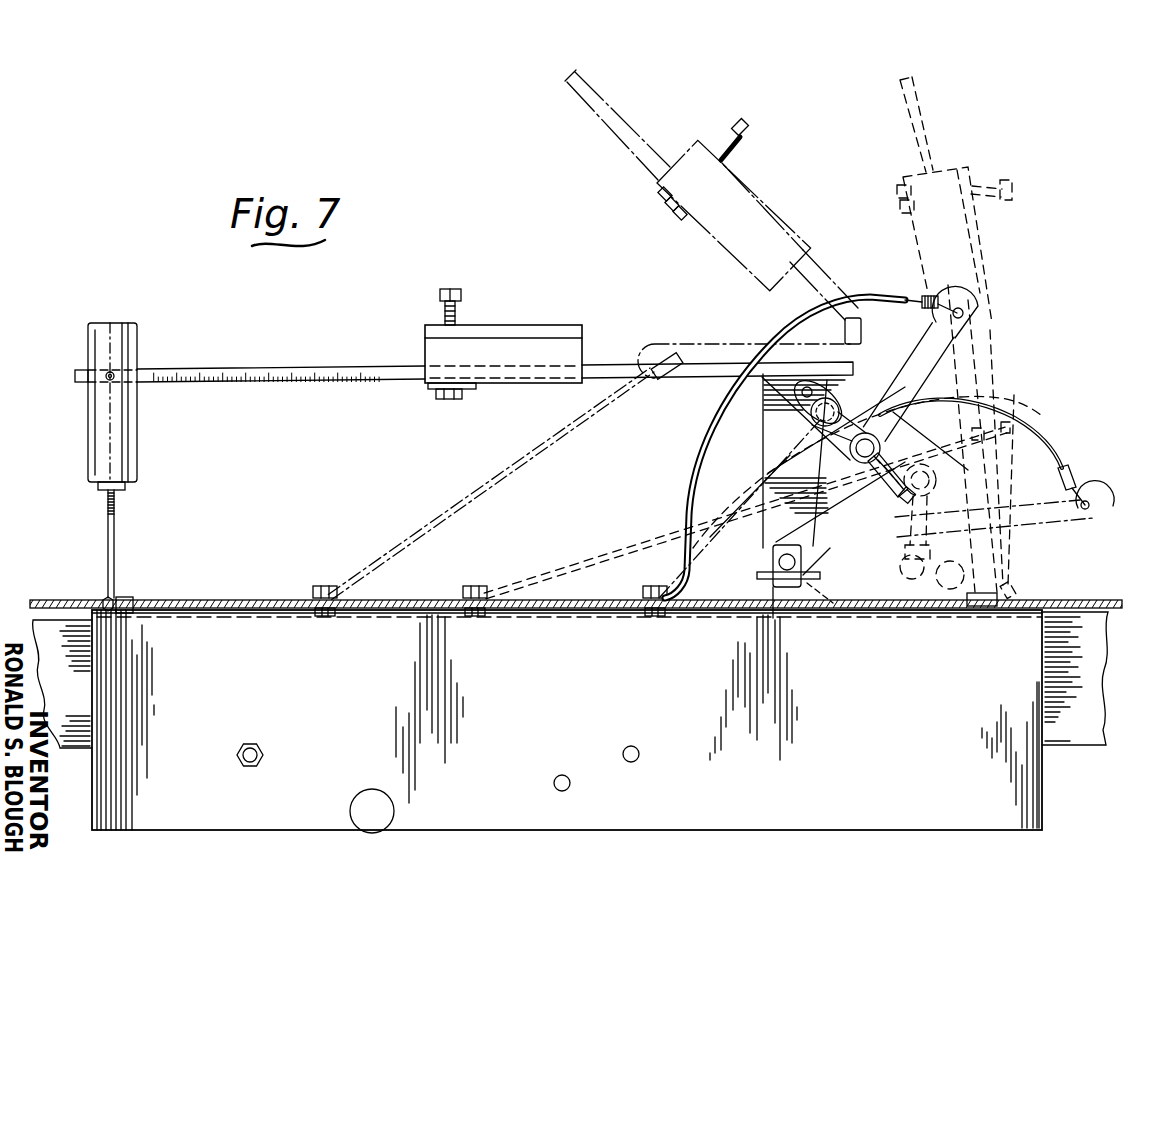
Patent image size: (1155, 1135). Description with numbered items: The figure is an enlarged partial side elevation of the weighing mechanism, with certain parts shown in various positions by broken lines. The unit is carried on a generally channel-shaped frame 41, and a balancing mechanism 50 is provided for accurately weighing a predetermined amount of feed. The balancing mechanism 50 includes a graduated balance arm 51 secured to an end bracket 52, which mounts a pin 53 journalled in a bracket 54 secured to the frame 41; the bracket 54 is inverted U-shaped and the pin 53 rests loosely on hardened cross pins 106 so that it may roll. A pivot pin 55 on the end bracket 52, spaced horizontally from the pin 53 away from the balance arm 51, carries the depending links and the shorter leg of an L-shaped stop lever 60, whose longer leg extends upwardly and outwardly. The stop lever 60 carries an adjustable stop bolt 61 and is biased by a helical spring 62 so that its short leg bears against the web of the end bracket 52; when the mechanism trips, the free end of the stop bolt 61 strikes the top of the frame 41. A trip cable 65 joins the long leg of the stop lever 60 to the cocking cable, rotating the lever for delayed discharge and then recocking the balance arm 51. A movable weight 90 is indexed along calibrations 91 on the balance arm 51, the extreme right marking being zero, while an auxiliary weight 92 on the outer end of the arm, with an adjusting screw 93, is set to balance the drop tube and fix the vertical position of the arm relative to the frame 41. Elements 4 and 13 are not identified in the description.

The frame 4 is at (6, 617).
The track bar 13 is at (61, 600).
The frame 41 is at (100, 702).
The balancing mechanism 50 is at (621, 357).
The balance arm 51 is at (147, 369).
The end bracket 52 is at (766, 453).
The pin 53 is at (773, 564).
The bracket 54 is at (805, 567).
The pivot pin 55 is at (796, 431).
The stop lever 60 is at (936, 370).
The stop bolt 61 is at (886, 486).
The helical spring 62 is at (770, 407).
The trip cable 65 is at (688, 482).
The movable weight 90 is at (505, 346).
The calibrations 91 is at (153, 381).
The auxiliary weight 92 is at (127, 331).
The adjusting screw 93 is at (118, 540).
The cross pins 106 is at (757, 576).